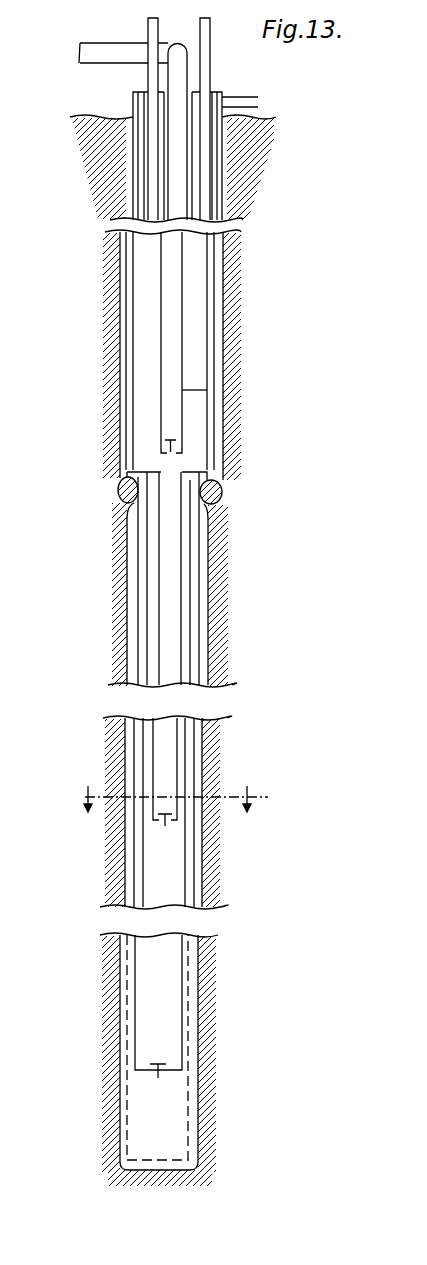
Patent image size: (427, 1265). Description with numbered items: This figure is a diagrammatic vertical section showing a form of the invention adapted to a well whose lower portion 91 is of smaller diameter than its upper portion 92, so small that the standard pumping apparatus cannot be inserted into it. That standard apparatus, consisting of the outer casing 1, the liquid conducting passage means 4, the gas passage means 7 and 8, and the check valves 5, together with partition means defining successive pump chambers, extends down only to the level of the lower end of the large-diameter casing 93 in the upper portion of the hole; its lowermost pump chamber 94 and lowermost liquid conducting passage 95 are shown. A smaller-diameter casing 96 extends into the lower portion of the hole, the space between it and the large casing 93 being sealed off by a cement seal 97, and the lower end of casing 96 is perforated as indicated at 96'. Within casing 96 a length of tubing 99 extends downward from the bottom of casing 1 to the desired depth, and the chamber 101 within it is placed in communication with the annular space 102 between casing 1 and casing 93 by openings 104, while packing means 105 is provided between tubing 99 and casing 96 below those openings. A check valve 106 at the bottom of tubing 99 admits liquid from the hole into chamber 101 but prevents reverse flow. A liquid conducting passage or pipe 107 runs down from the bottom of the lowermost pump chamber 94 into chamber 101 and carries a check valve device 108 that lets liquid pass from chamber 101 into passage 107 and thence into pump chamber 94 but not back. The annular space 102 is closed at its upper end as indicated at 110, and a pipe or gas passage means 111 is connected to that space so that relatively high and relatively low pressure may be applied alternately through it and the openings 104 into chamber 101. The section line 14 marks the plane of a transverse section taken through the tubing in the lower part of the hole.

The outer casing 1 is at (214, 265).
The liquid conducting passage means 4 is at (207, 390).
The check valves 5 is at (178, 438).
The gas passage means 7 is at (152, 162).
The gas passage means 8 is at (202, 167).
The section line 14 is at (170, 799).
The lower portion of the hole 91 is at (203, 762).
The upper portion of the hole 92 is at (228, 430).
The casing 93 is at (214, 447).
The lowermost pump chamber 94 is at (197, 333).
The lowermost liquid conducting passage 95 is at (160, 195).
The smaller diameter casing 96 is at (211, 578).
The perforations 96' is at (210, 1047).
The cement seal 97 is at (222, 505).
The tubing 99 is at (190, 662).
The chamber 101 is at (165, 845).
The annular space 102 is at (210, 412).
The openings 104 is at (222, 483).
The packing means 105 is at (140, 518).
The check valve 106 is at (172, 1062).
The liquid conducting passage 107 is at (179, 603).
The check valve device 108 is at (165, 806).
The closure 110 is at (210, 92).
The pipe or gas passage means 111 is at (248, 100).